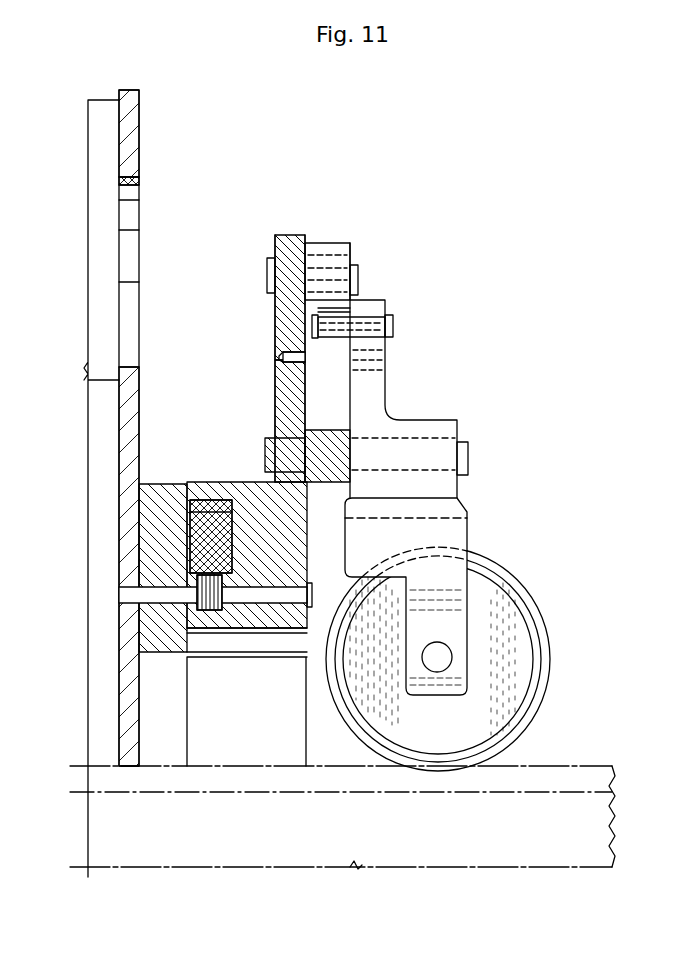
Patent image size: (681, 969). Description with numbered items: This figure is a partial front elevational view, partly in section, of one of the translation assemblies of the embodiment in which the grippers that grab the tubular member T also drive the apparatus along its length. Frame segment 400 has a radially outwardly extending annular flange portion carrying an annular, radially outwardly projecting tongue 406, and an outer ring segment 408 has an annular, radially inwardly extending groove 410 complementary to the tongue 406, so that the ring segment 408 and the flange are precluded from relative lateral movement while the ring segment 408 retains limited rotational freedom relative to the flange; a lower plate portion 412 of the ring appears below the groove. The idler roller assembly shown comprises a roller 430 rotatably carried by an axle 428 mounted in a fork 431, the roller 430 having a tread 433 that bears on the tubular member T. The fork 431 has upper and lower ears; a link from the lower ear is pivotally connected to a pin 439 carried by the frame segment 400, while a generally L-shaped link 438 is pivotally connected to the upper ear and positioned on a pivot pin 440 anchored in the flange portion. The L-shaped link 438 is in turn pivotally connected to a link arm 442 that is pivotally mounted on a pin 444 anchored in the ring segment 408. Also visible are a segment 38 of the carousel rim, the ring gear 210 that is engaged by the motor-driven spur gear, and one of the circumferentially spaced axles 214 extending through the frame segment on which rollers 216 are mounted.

The second segment of rim 38 is at (140, 125).
The outer ring segment 408 is at (290, 236).
The pin 444 is at (356, 268).
The link arm 442 is at (328, 330).
The pivot pin 440 is at (393, 327).
The groove 410 is at (284, 354).
The tongue 406 is at (307, 358).
The lower mounting plate 412 is at (288, 412).
The L-shaped link 438 is at (380, 423).
The pin 439 is at (467, 465).
The fork 431 is at (462, 540).
The roller 430 is at (490, 583).
The axle 428 is at (437, 657).
The wheel tread 433 is at (438, 737).
The ring gear 210 is at (217, 542).
The rollers 216 is at (197, 600).
The frame segment 400 is at (268, 613).
The axles 214 is at (283, 590).
The tubular member T is at (578, 764).